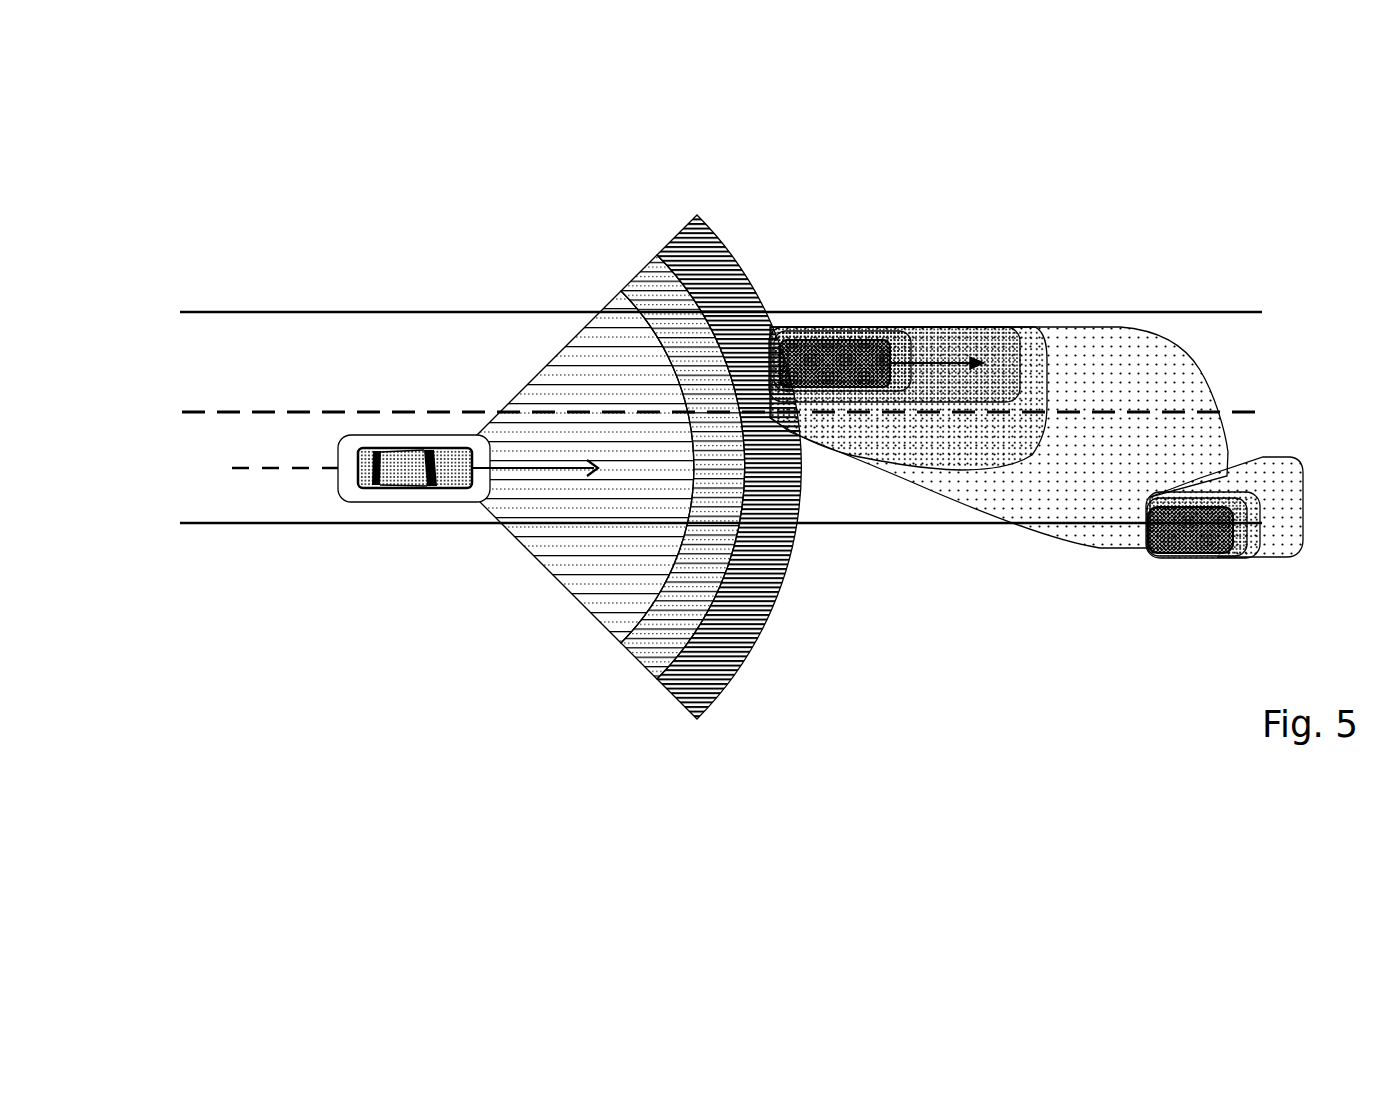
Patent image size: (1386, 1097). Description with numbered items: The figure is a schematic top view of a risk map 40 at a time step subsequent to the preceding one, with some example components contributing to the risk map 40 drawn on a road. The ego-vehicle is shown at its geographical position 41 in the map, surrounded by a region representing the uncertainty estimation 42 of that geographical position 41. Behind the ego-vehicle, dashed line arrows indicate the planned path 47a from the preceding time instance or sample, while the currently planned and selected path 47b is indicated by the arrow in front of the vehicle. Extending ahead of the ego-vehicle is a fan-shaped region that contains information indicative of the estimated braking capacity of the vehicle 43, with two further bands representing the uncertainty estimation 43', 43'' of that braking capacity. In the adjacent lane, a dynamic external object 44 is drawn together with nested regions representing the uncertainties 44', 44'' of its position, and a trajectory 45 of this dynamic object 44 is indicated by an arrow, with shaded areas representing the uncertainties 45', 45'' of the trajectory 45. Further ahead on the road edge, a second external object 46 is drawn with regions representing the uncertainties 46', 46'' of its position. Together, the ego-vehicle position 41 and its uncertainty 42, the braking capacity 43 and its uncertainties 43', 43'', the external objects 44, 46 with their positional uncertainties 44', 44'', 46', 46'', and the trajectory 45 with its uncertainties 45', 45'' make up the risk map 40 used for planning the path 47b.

The risk map 40 is at (486, 746).
The geographical position of the ego-vehicle 41 is at (405, 489).
The uncertainty estimation of the geographical position 42 is at (366, 502).
The estimated braking capacity of the vehicle 43 is at (569, 483).
The uncertainty estimation of the braking capacity 43' is at (676, 508).
The uncertainty estimation of the braking capacity 43'' is at (726, 507).
The external object 44 is at (835, 309).
The uncertainty of the position of the external object 44' is at (842, 311).
The uncertainty of the position of the external object 44'' is at (943, 324).
The trajectory of dynamic object 45 is at (938, 283).
The uncertainty of the trajectory 45' is at (908, 417).
The uncertainty of the trajectory 45'' is at (999, 472).
The external object 46 is at (1170, 572).
The uncertainty of the position of the external object 46' is at (1203, 562).
The uncertainty of the position of the external object 46'' is at (1238, 471).
The planned path from a preceding time instance 47a is at (305, 463).
The currently planned and selected path 47b is at (547, 473).